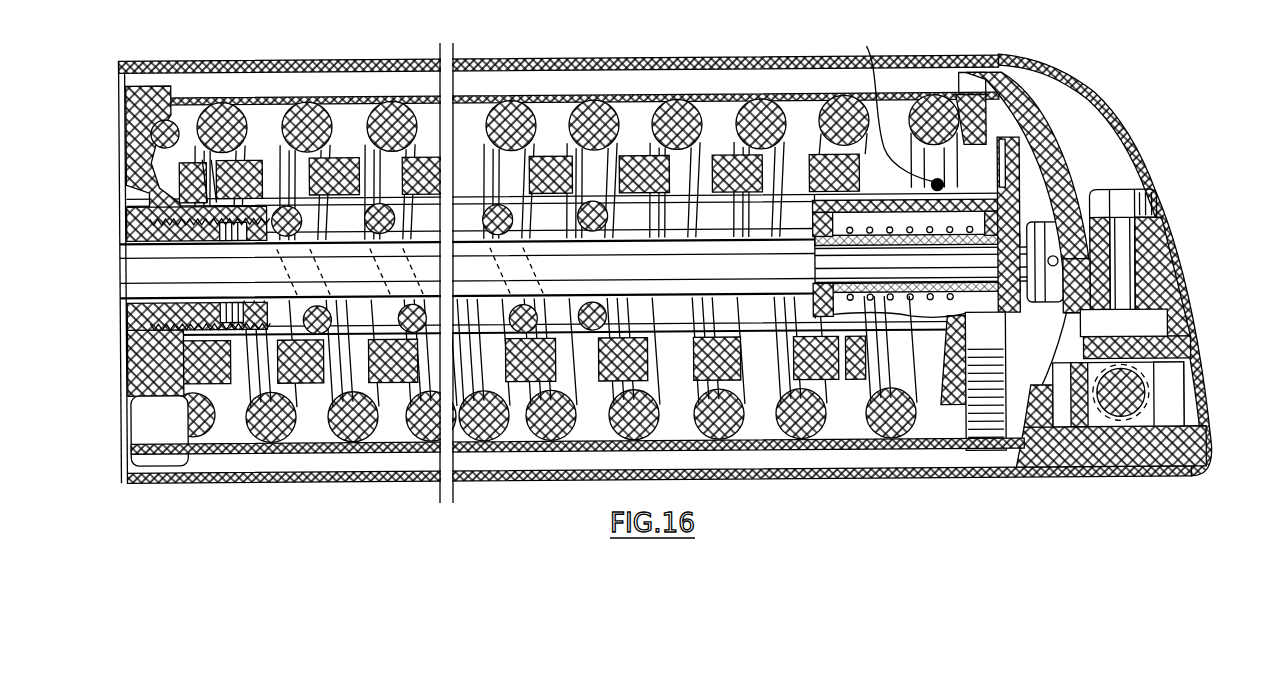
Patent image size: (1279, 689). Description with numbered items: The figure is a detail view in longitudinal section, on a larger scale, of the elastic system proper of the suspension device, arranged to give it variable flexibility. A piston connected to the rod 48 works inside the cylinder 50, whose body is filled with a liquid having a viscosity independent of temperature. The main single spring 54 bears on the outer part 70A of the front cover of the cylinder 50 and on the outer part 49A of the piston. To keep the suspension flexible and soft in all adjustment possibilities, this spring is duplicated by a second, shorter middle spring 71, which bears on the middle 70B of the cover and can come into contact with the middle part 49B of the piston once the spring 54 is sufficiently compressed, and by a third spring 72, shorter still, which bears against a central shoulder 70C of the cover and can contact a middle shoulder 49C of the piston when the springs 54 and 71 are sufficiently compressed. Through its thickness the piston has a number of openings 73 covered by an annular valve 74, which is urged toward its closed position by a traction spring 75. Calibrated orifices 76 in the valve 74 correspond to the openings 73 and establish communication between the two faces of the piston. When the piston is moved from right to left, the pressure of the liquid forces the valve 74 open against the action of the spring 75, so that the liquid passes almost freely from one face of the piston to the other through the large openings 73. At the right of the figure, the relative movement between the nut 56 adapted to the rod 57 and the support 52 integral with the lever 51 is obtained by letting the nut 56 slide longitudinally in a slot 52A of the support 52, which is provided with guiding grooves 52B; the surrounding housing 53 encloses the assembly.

The rod 48 is at (467, 268).
The outer part of the piston 49A is at (977, 125).
The middle part of the piston 49B is at (887, 100).
The middle shoulder of the piston 49C is at (795, 232).
The cylinder 50 is at (943, 84).
The lever 51 is at (1115, 188).
The support 52 is at (1163, 273).
The slot 52A is at (1170, 396).
The guiding grooves 52B is at (1170, 333).
The housing 53 is at (1117, 103).
The spring 54 is at (870, 90).
The nut 56 is at (1143, 426).
The rod 57 is at (1107, 413).
The outer part of the front cover 70A is at (150, 118).
The middle of the cover 70B is at (140, 122).
The central shoulder of the cover 70C is at (252, 218).
The second middle spring 71 is at (722, 123).
The third spring 72 is at (372, 195).
The openings 73 is at (1000, 135).
The annular valve 74 is at (1017, 191).
The traction spring 75 is at (940, 298).
The calibrated orifices 76 is at (1017, 193).